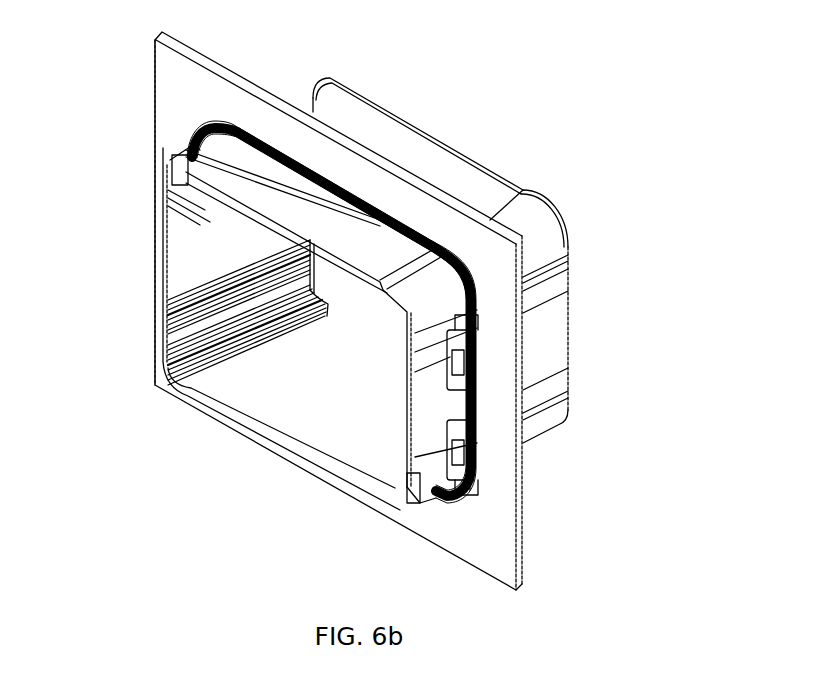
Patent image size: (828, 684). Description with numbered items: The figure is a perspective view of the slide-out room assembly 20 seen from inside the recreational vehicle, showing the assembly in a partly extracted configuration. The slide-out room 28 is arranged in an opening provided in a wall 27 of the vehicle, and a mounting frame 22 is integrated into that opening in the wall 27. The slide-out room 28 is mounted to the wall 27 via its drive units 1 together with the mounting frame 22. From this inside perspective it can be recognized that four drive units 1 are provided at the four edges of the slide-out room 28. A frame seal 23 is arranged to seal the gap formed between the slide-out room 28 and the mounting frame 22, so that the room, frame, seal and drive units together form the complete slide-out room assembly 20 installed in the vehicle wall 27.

The drive unit 1 is at (186, 226).
The slide-out room assembly 20 is at (486, 135).
The mounting frame 22 is at (235, 130).
The frame seal 23 is at (195, 137).
The wall 27 is at (185, 80).
The slide-out room 28 is at (413, 160).